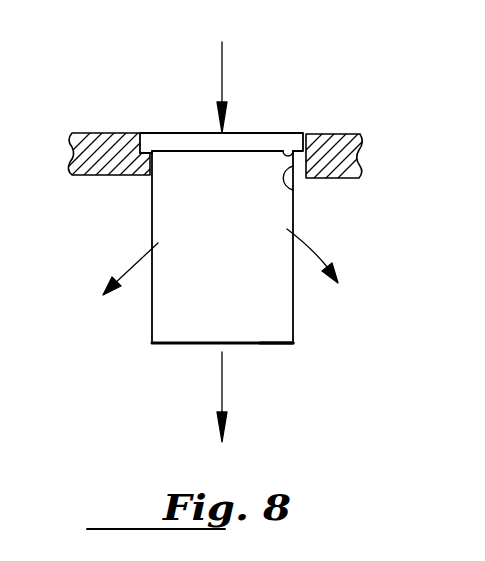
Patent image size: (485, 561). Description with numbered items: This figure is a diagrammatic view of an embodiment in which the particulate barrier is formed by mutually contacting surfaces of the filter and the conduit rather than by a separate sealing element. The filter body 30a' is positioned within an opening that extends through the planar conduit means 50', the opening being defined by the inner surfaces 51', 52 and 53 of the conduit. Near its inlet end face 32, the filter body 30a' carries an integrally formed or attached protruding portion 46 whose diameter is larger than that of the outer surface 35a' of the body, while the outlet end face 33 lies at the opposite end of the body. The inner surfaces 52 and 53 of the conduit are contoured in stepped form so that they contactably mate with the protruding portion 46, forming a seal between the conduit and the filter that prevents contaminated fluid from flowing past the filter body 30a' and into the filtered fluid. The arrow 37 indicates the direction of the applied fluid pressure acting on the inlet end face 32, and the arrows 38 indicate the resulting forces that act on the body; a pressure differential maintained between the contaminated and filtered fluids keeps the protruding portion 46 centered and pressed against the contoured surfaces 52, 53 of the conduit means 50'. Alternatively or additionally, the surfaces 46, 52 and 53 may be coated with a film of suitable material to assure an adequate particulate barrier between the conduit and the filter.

The filter body 30a' is at (179, 270).
The inlet end face 32 is at (270, 133).
The outlet end face 33 is at (275, 344).
The outer surface 35a' is at (226, 240).
The applied force arrow 37 is at (222, 72).
The force direction arrows 38 is at (140, 255).
The protruding portion 46 is at (148, 142).
The planar conduit means 50' is at (121, 122).
The inner surface 51' is at (326, 185).
The inner surface 52 is at (288, 155).
The inner surface 53 is at (302, 133).